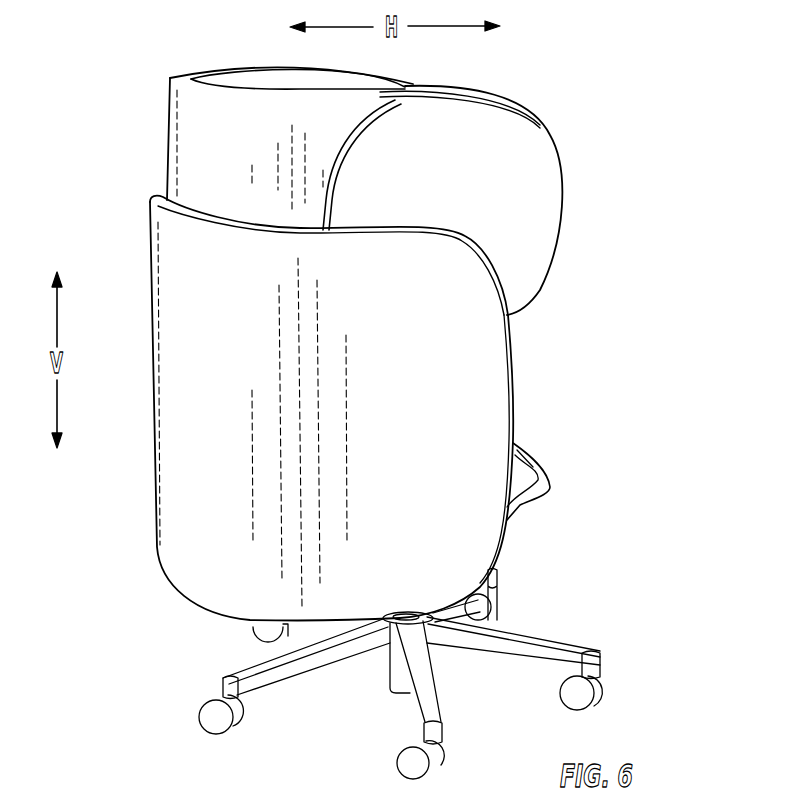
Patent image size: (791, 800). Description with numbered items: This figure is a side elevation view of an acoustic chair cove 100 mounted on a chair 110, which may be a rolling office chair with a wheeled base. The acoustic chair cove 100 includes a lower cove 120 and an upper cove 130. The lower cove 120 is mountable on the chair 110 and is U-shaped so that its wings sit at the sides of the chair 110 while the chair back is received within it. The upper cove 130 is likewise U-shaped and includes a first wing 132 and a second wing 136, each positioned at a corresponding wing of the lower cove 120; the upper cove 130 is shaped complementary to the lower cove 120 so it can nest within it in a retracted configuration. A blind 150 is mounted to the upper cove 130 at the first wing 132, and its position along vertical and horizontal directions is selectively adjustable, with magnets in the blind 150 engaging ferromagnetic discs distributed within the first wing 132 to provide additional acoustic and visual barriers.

The acoustic chair cove 100 is at (423, 400).
The chair 110 is at (394, 670).
The lower cove 120 is at (187, 387).
The upper cove 130 is at (255, 117).
The first wing 132 is at (440, 88).
The second wing 136 is at (303, 78).
The blind 150 is at (480, 179).